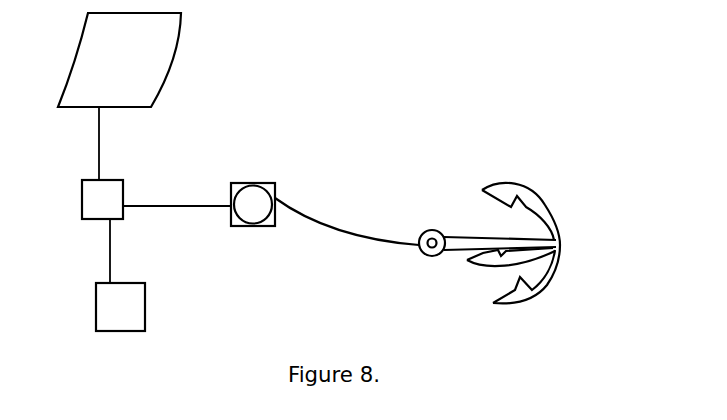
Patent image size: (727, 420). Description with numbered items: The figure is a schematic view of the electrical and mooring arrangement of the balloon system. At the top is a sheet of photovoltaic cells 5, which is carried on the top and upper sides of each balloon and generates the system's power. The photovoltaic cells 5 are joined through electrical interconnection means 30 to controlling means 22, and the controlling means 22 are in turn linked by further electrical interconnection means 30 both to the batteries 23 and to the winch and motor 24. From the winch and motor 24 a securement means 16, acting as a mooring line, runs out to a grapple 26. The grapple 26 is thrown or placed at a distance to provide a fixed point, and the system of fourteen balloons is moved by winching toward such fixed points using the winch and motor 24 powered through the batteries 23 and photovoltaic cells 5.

The photovoltaic cells 5 is at (176, 60).
The electrical interconnection means 30 is at (99, 138).
The controlling means 22 is at (82, 205).
The batteries 23 is at (96, 308).
The winch and motor 24 is at (276, 193).
The securement means 16 is at (383, 246).
The grapple 26 is at (550, 283).